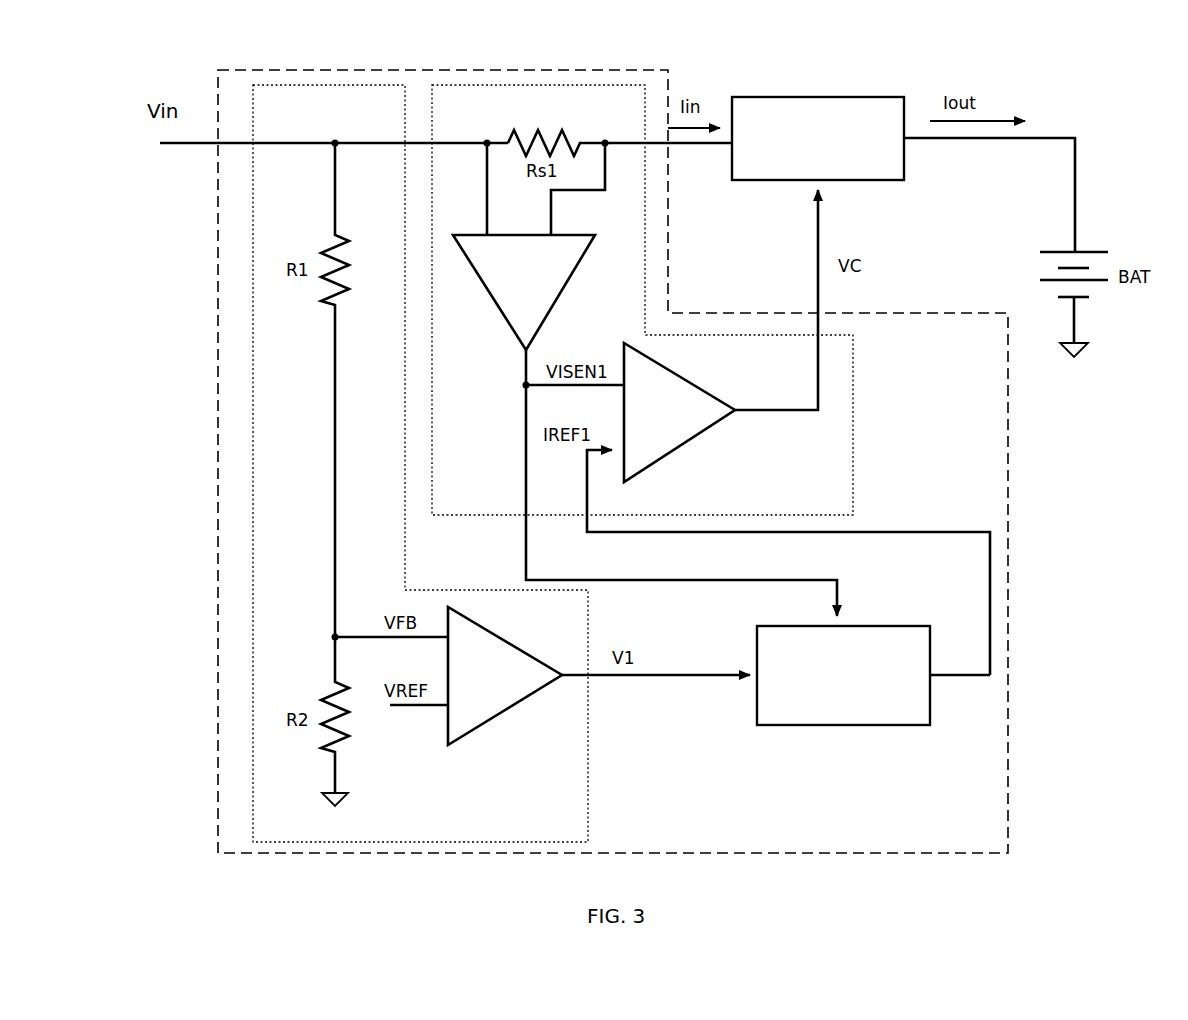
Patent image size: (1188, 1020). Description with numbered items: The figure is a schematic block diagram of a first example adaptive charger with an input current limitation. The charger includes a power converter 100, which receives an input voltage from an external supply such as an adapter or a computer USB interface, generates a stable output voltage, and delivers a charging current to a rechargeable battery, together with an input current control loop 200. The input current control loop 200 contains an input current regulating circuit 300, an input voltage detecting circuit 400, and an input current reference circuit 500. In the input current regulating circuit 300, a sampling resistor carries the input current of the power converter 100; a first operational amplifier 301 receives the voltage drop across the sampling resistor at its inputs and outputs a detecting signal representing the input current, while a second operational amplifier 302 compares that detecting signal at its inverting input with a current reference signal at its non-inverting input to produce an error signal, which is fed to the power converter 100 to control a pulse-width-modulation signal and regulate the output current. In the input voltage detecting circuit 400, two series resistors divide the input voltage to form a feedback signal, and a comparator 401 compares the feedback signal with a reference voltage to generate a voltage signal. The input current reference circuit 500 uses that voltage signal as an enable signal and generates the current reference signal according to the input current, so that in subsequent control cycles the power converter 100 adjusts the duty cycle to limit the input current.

The power converter 100 is at (852, 97).
The input current control loop 200 is at (452, 70).
The input current regulating circuit 300 is at (525, 85).
The operational amplifier 301 is at (563, 290).
The operational amplifier 302 is at (700, 440).
The input voltage detecting circuit 400 is at (322, 85).
The comparator 401 is at (480, 730).
The input current reference circuit 500 is at (858, 725).